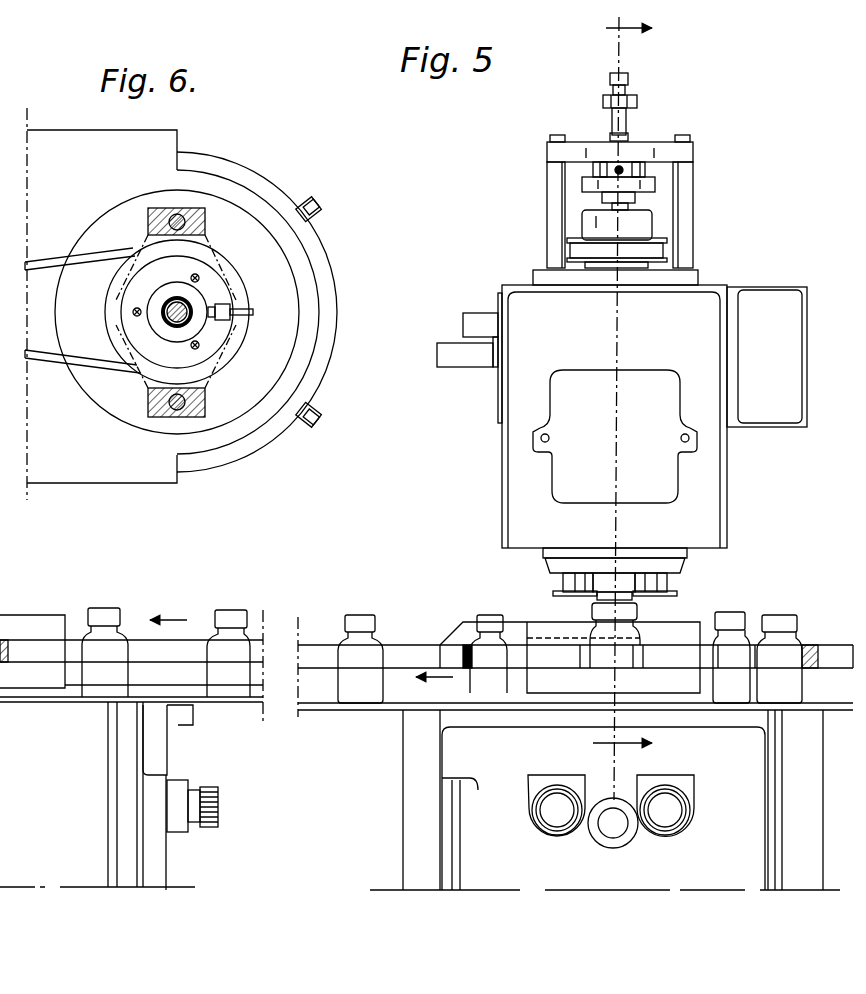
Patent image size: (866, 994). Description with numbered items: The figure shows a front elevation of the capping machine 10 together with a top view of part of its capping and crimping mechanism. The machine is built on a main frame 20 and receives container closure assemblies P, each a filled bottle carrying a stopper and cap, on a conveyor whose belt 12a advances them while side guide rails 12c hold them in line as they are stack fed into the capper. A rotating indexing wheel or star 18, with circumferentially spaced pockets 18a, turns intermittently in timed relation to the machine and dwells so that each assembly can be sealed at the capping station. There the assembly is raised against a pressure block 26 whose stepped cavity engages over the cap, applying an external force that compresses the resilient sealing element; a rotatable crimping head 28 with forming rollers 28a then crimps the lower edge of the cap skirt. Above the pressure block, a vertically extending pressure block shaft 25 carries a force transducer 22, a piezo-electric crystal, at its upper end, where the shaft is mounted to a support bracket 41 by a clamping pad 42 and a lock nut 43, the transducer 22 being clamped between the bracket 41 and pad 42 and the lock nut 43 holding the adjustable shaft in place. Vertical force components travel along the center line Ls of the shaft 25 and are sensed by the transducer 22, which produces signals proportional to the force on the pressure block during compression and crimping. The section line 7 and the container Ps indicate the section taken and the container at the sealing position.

In FIG. 6, the capping machine 10 is at (80, 135).
In FIG. 5, the capping machine 10 is at (713, 284).
In FIG. 5, the belt 12a is at (236, 704).
In FIG. 5, the side guide rails 12c is at (318, 650).
In FIG. 5, the rotating indexing wheel or star 18 is at (557, 664).
In FIG. 5, the pockets 18a is at (500, 660).
In FIG. 5, the main frame 20 is at (413, 741).
In FIG. 6, the force transducer 22 is at (193, 298).
In FIG. 5, the force transducer 22 is at (636, 166).
In FIG. 6, the pressure block shaft 25 is at (163, 316).
In FIG. 5, the pressure block shaft 25 is at (612, 131).
In FIG. 5, the pressure block 26 is at (613, 570).
In FIG. 5, the rotatable crimping head 28 is at (690, 568).
In FIG. 5, the forming discs or rollers 28a is at (558, 598).
In FIG. 6, the support bracket 41 is at (196, 214).
In FIG. 5, the support bracket 41 is at (655, 152).
In FIG. 6, the clamping pad 42 is at (215, 335).
In FIG. 5, the clamping pad 42 is at (582, 182).
In FIG. 5, the lock nut 43 is at (636, 198).
In FIG. 5, the section line 7 is at (614, 392).
In FIG. 5, the container closure assemblies P is at (789, 614).
In FIG. 5, the container at station Ps is at (463, 622).
In FIG. 5, the center line Ls is at (615, 56).